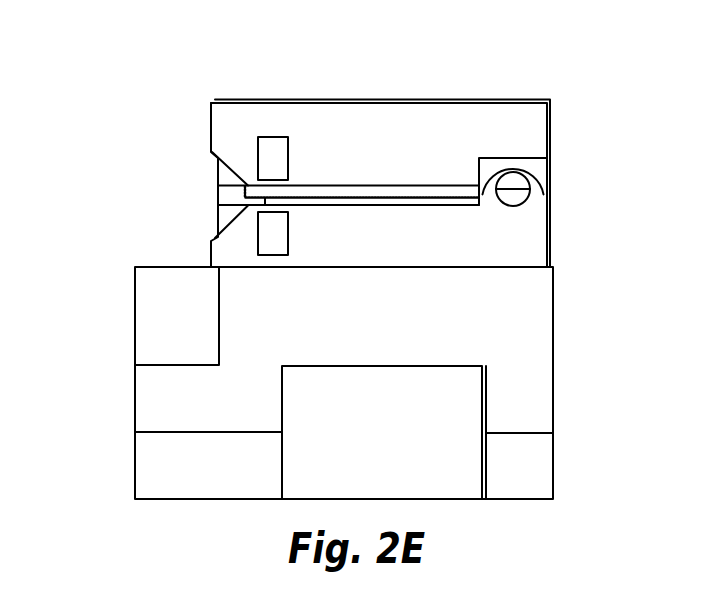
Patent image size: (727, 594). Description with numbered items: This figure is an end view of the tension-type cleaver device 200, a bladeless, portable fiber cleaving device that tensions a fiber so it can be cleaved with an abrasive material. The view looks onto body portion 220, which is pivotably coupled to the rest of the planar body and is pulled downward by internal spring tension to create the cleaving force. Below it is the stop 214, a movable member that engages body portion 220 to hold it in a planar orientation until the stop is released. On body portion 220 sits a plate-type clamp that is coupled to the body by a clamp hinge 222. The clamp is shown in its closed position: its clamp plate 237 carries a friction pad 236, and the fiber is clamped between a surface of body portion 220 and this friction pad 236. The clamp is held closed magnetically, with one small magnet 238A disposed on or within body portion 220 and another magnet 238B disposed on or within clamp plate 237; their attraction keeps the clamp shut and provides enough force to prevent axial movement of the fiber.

The tension-type cleaver device 200 is at (277, 82).
The stop 214 is at (527, 324).
The second body portion 220 is at (528, 231).
The clamp hinge 222 is at (518, 184).
The friction pad 236 is at (353, 192).
The clamp plate 237 is at (437, 113).
The magnet 238A is at (270, 160).
The magnet 238B is at (268, 227).